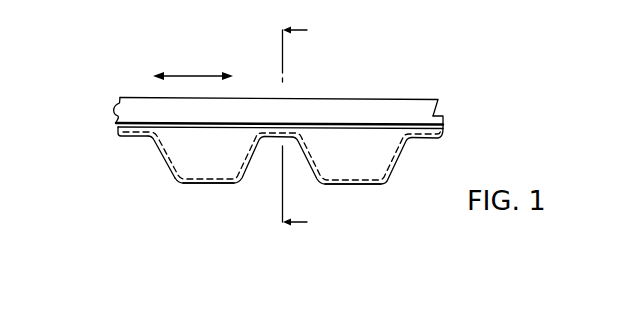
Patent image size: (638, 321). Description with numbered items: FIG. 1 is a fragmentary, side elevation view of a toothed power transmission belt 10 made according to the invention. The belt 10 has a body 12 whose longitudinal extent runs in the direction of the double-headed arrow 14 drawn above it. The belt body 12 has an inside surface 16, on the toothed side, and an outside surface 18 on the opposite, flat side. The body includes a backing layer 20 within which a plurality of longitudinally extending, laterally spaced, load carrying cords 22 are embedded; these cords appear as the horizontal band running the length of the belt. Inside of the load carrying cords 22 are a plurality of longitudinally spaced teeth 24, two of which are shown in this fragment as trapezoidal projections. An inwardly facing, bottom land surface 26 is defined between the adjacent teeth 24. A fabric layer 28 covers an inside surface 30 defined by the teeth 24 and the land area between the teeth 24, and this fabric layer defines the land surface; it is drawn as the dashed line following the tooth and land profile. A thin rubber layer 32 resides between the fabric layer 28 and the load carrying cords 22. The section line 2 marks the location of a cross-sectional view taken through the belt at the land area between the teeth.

The toothed power transmission belt 10 is at (458, 95).
The belt body 12 is at (107, 108).
The double-headed arrow 14 is at (200, 76).
The inside surface 16 is at (211, 185).
The outside surface 18 is at (358, 99).
The backing layer 20 is at (430, 117).
The load carrying cords 22 is at (401, 123).
The teeth 24 is at (216, 162).
The bottom land surface 26 is at (272, 139).
The fabric layer 28 is at (163, 160).
The inside surface of the teeth 30 is at (193, 184).
The thin rubber layer 32 is at (118, 129).
The section line 2- 2 is at (304, 125).